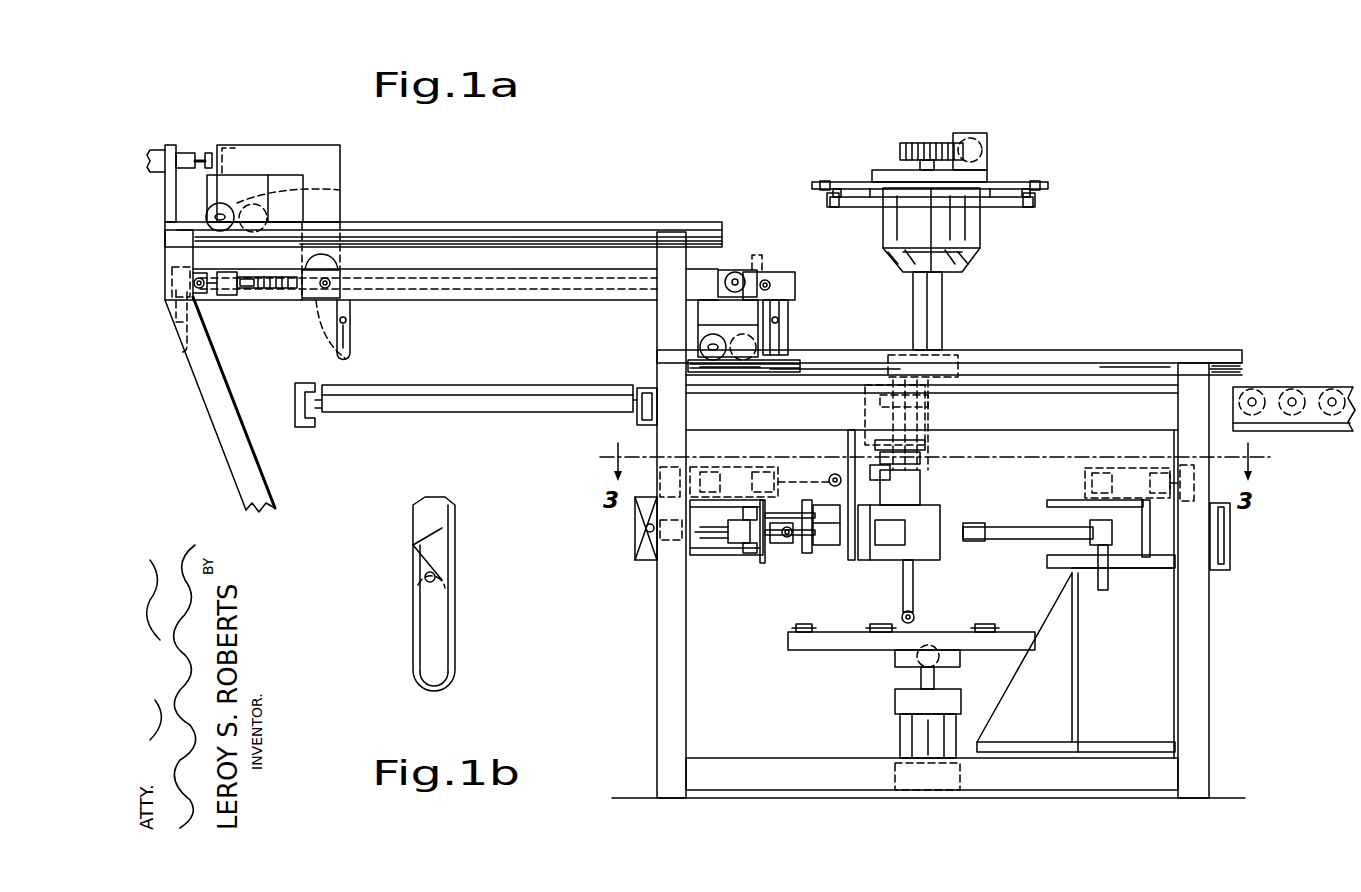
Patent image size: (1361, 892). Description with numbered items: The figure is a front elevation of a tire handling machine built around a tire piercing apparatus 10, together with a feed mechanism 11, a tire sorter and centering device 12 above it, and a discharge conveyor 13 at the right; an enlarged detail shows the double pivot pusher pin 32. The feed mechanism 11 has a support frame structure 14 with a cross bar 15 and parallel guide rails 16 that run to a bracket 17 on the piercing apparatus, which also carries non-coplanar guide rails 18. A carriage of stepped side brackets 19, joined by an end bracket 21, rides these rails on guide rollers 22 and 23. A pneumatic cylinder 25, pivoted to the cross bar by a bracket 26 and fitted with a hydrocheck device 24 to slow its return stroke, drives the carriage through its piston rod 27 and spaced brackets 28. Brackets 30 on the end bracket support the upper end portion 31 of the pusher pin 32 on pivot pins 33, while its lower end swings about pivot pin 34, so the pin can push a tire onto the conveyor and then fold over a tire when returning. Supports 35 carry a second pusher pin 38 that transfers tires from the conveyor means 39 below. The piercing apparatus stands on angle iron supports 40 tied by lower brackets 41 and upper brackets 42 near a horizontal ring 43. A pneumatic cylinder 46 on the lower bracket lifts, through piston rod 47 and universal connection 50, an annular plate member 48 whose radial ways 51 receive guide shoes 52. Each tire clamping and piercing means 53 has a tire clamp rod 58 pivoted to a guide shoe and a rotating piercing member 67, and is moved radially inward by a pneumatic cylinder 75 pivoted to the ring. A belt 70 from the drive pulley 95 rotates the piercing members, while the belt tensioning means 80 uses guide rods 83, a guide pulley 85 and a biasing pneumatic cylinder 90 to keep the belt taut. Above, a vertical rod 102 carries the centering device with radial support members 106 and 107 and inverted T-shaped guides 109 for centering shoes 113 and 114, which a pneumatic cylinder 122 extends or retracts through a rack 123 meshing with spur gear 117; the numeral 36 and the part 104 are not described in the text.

In FIG. 1A, the tire piercing apparatus 10 is at (1260, 600).
In FIG. 1A, the feed mechanism 11 is at (512, 190).
In FIG. 1A, the tire sorter and centering device 12 is at (930, 103).
In FIG. 1A, the discharge conveyor 13 is at (1312, 434).
In FIG. 1A, the support frame structure 14 is at (245, 474).
In FIG. 1A, the cross bar 15 is at (178, 310).
In FIG. 1A, the guide rails 16 is at (528, 228).
In FIG. 1A, the bracket 17 is at (670, 372).
In FIG. 1A, the guide rails 18 is at (1098, 358).
In FIG. 1A, the side brackets 19 is at (313, 155).
In FIG. 1A, the end bracket 21 is at (757, 270).
In FIG. 1A, the guide rollers 22 is at (235, 208).
In FIG. 1A, the guide rollers 23 is at (740, 350).
In FIG. 1A, the hydrocheck device 24 is at (183, 158).
In FIG. 1A, the pneumatic cylinder 25 is at (262, 297).
In FIG. 1A, the bracket 26 is at (185, 345).
In FIG. 1A, the piston rod 27 is at (703, 288).
In FIG. 1A, the spaced brackets 28 is at (738, 270).
In FIG. 1A, the spaced brackets 30 is at (770, 282).
In FIG. 1A, the upper end portion 31 is at (790, 300).
In FIG. 1A, the double pivot pusher pin 32 is at (792, 344).
In FIG. 1B, the double pivot pusher pin 32 is at (460, 637).
In FIG. 1A, the pivot pins 33 is at (772, 284).
In FIG. 1B, the pivot pin 34 is at (437, 578).
In FIG. 1A, the laterally extending supports 35 is at (303, 264).
In FIG. 1A, the link 36 is at (327, 300).
In FIG. 1A, the pusher pin 38 is at (353, 352).
In FIG. 1A, the conveyor means 39 is at (490, 400).
In FIG. 1A, the angle iron supports 40 is at (668, 767).
In FIG. 1A, the brackets 41 is at (805, 775).
In FIG. 1A, the brackets 42 is at (1062, 405).
In FIG. 1A, the ring 43 is at (947, 490).
In FIG. 1A, the pneumatic cylinder 46 is at (900, 743).
In FIG. 1A, the piston rod 47 is at (935, 676).
In FIG. 1A, the annular plate member 48 is at (980, 640).
In FIG. 1A, the universal connection 50 is at (895, 656).
In FIG. 1A, the radially extending ways 51 is at (845, 628).
In FIG. 1A, the guide shoe 52 is at (905, 632).
In FIG. 1A, the tire clamping and piercing means 53 is at (847, 551).
In FIG. 1A, the tire clamp rod 58 is at (903, 597).
In FIG. 1A, the piercing member 67 is at (888, 388).
In FIG. 1A, the belt 70 is at (1053, 533).
In FIG. 1A, the pneumatic cylinder 75 is at (740, 467).
In FIG. 1A, the belt tensioning means 80 is at (740, 560).
In FIG. 1A, the guide rods 83 is at (638, 514).
In FIG. 1A, the guide pulley 85 is at (970, 527).
In FIG. 1A, the pneumatic cylinder 90 is at (700, 540).
In FIG. 1A, the drive pulley 95 is at (1107, 570).
In FIG. 1A, the rod 102 is at (928, 316).
In FIG. 1A, the block 104 is at (885, 174).
In FIG. 1A, the support member 106 is at (1030, 185).
In FIG. 1A, the support member 107 is at (822, 184).
In FIG. 1A, the inverted T-shaped guide 109 is at (1040, 203).
In FIG. 1A, the centering shoe 113 is at (957, 233).
In FIG. 1A, the centering shoe 114 is at (915, 264).
In FIG. 1A, the spur gear 117 is at (922, 148).
In FIG. 1A, the pneumatic cylinder 122 is at (962, 135).
In FIG. 1A, the rack 123 is at (980, 151).